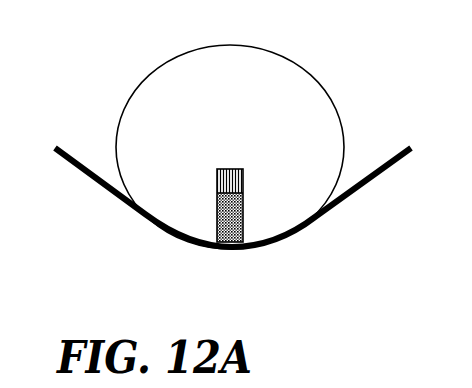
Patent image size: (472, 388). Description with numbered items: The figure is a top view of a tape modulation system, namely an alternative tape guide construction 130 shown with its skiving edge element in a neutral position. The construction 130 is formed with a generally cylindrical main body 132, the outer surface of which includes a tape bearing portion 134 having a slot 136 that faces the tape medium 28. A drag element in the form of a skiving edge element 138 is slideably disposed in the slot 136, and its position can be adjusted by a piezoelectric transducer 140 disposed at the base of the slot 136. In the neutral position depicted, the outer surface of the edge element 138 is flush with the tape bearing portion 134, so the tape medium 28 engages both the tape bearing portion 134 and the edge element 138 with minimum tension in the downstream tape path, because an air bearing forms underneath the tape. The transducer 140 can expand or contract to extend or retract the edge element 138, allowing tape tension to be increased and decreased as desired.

The alternative construction 130 is at (110, 57).
The cylindrical main body 132 is at (269, 70).
The tape bearing portion 134 is at (342, 198).
The tape medium 28 is at (92, 180).
The slot 136 is at (217, 193).
The skiving edge element 138 is at (230, 219).
The piezoelectric transducer 140 is at (228, 175).